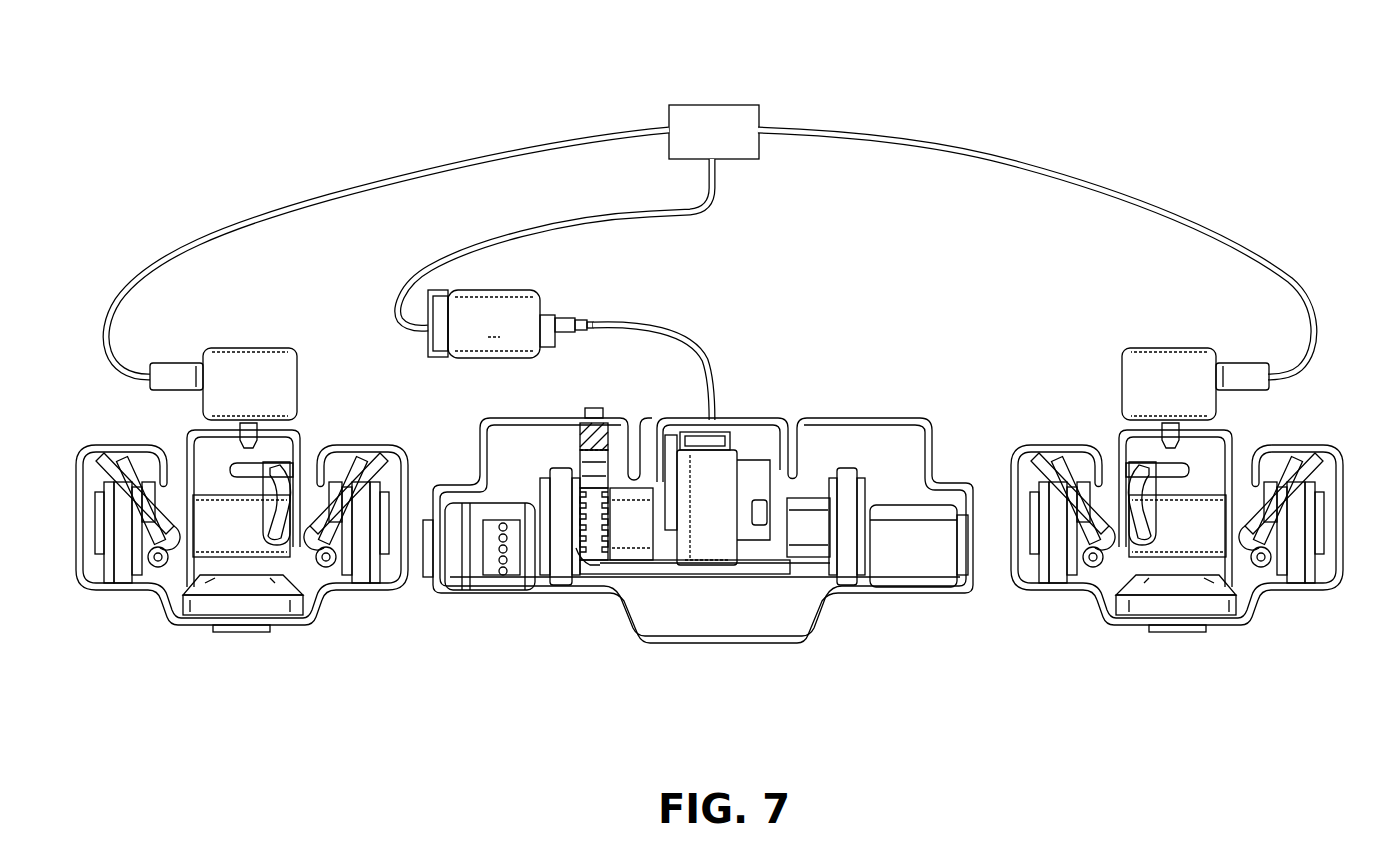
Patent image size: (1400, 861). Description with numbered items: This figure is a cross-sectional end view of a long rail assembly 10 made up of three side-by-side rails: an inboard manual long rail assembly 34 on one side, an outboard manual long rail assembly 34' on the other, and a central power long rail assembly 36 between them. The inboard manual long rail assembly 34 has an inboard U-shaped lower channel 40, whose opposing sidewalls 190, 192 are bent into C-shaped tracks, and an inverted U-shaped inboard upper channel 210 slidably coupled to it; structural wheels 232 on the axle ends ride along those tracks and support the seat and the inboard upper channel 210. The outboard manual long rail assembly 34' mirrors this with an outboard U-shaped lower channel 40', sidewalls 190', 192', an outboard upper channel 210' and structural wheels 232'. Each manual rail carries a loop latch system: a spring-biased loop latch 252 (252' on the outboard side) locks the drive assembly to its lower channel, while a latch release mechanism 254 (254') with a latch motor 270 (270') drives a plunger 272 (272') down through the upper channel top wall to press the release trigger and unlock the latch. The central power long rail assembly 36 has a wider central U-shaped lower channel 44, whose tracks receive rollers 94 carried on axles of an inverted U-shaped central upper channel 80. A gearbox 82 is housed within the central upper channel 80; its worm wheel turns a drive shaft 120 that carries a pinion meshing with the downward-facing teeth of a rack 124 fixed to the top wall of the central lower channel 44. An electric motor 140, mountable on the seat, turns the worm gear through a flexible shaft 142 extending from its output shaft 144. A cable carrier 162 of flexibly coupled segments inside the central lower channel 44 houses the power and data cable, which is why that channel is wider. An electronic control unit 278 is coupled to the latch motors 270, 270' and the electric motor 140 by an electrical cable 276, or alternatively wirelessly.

The long rail assembly 10 is at (1248, 140).
The inboard manual long rail assembly 34 is at (114, 492).
The outboard manual long rail assembly 34' is at (1306, 494).
The central power long rail assembly 36 is at (899, 374).
The inboard U-shaped lower channel 40 is at (246, 638).
The outboard U-shaped lower channel 40' is at (1177, 649).
The central U-shaped lower channel 44 is at (778, 660).
The central upper channel 80 is at (752, 412).
The gearbox 82 is at (702, 537).
The rollers 94 is at (560, 580).
The drive shaft 120 is at (630, 515).
The rack 124 is at (588, 446).
The electric motor 140 is at (532, 308).
The flexible shaft 142 is at (694, 343).
The output shaft 144 is at (572, 318).
The cable carrier 162 is at (510, 494).
The sidewall 190 is at (107, 546).
The sidewall 190' is at (1322, 517).
The sidewall 192 is at (375, 499).
The sidewall 192' is at (1035, 503).
The inboard upper channel 210 is at (201, 492).
The outboard upper channel 210' is at (1216, 488).
The structural wheels 232 is at (242, 580).
The structural wheels 232' is at (1171, 571).
The loop latch 252 is at (251, 572).
The loop latch 252' is at (1145, 579).
The latch release mechanism 254 is at (266, 357).
The latch release mechanism 254' is at (1162, 349).
The latch motor 270 is at (176, 342).
The latch motor 270' is at (1242, 350).
The plunger 272 is at (308, 432).
The plunger 272' is at (1109, 423).
The electrical cable 276 is at (368, 184).
The electronic control unit 278 is at (750, 92).